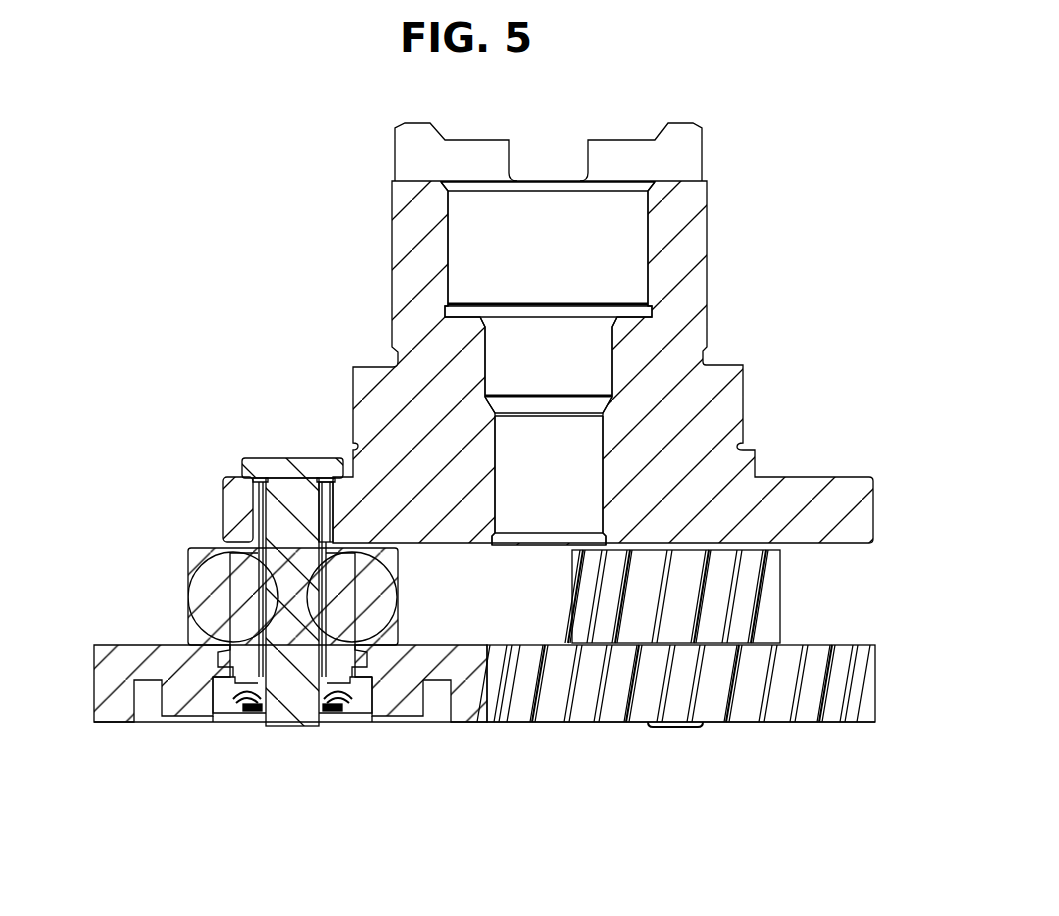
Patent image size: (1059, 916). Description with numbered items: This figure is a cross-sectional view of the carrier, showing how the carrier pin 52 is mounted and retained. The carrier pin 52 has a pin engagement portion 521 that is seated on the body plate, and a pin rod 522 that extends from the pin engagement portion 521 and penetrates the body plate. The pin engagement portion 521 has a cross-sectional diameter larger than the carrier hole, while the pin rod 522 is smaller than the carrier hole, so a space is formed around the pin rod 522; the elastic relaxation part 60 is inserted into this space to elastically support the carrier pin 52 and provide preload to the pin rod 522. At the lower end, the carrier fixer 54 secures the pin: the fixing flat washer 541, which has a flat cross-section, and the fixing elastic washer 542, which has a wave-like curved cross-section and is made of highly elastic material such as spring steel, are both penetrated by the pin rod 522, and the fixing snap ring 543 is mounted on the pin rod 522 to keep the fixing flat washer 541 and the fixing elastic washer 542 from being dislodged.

The carrier pin 52 is at (196, 505).
The pin engagement portion 521 is at (257, 465).
The pin rod 522 is at (287, 572).
The elastic relaxation part 60 is at (336, 496).
The carrier fixer 54 is at (313, 775).
The fixing flat washer 541 is at (327, 683).
The fixing elastic washer 542 is at (250, 720).
The fixing snap ring 543 is at (292, 753).